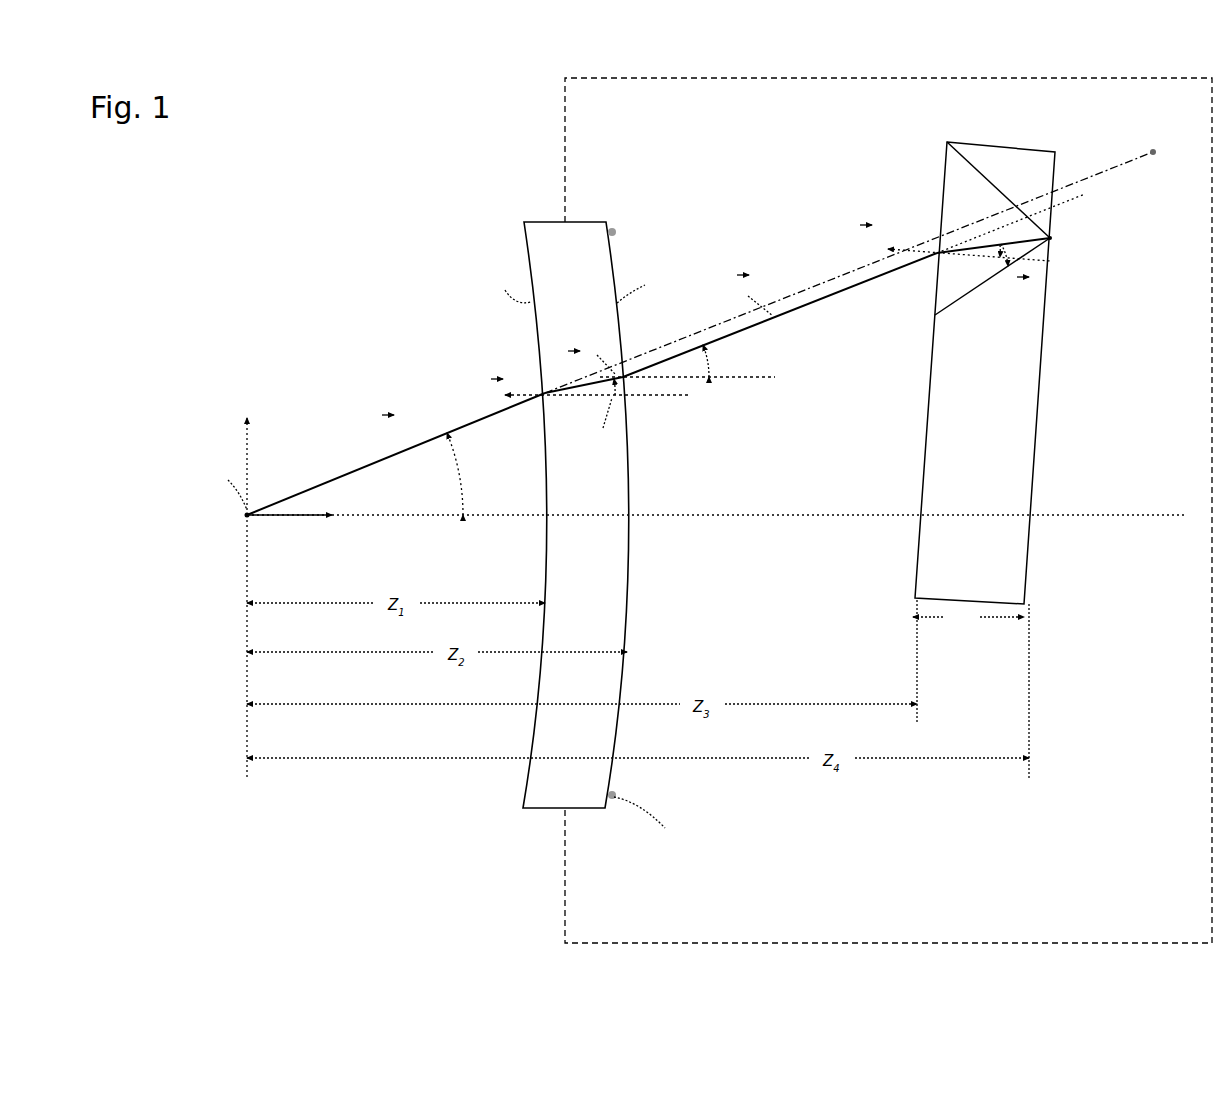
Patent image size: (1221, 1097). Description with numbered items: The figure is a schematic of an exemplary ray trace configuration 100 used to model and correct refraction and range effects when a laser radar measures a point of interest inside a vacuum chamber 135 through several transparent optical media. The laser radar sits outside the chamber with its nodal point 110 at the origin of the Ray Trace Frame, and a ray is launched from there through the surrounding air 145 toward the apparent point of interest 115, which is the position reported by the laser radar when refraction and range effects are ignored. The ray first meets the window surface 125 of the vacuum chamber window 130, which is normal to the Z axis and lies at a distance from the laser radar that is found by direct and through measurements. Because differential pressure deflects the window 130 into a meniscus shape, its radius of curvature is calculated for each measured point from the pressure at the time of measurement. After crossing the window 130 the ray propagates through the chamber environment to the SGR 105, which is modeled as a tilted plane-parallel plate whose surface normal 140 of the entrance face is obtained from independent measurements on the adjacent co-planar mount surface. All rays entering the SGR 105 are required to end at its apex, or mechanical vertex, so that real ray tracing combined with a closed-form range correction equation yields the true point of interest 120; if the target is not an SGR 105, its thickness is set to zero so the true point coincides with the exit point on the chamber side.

The ray trace configuration 100 is at (323, 290).
The SGR 105 is at (1008, 397).
The nodal point 110 is at (236, 527).
The apparent point of interest 115 is at (1153, 165).
The true point of interest 120 is at (1058, 243).
The window surface 125 is at (528, 772).
The vacuum chamber window 130 is at (596, 277).
The vacuum chamber 135 is at (831, 185).
The surface normal 140 is at (900, 243).
The air 145 is at (416, 129).